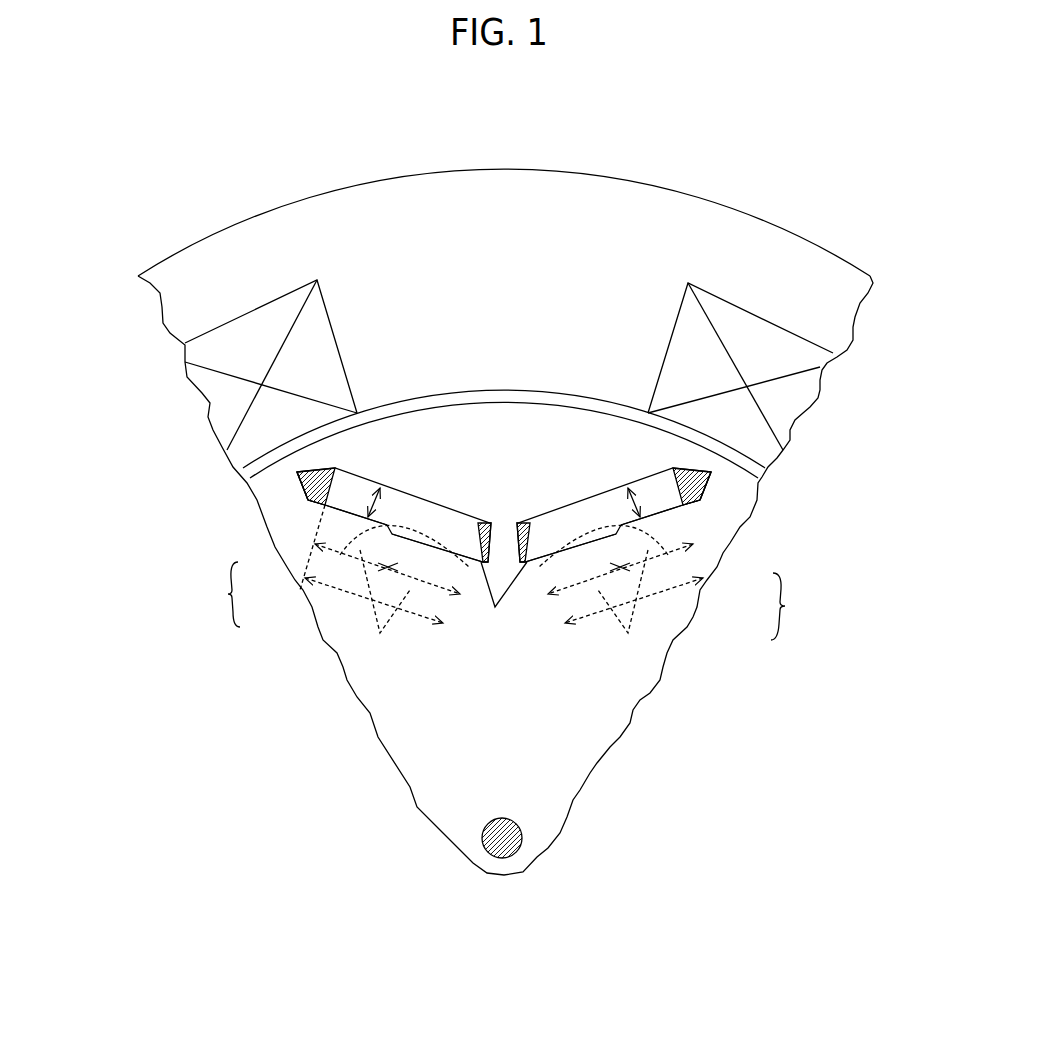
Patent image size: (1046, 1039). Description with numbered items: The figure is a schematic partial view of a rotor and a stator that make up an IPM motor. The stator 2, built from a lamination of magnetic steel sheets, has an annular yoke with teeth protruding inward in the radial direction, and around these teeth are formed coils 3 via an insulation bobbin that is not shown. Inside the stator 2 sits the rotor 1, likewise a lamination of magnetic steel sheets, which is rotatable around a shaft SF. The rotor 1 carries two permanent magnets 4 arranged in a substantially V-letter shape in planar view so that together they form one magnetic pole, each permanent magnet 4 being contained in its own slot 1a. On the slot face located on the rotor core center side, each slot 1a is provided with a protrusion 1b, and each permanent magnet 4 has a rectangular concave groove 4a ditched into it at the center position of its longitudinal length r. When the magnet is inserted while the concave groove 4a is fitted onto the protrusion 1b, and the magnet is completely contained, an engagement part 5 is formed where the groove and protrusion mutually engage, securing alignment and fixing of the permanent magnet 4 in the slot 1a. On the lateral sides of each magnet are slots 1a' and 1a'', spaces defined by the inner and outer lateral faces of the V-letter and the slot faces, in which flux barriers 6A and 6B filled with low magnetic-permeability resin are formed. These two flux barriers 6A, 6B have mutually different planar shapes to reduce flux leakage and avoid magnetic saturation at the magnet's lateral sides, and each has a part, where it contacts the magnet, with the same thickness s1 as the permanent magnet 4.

The rotor 1 is at (580, 777).
The stator 2 is at (617, 193).
The coils 3 is at (218, 395).
The permanent magnet 4 is at (400, 490).
The engagement part 5 is at (506, 601).
The flux barrier 6A is at (298, 492).
The flux barrier 6B is at (478, 524).
The slot 1a is at (504, 613).
The slot 1a' is at (502, 519).
The slot 1a'' is at (502, 600).
The protrusion 1b is at (305, 578).
The concave groove 4a is at (315, 547).
The thickness s1 is at (297, 480).
The length of the permanent magnet r is at (504, 564).
The shaft SF is at (482, 838).